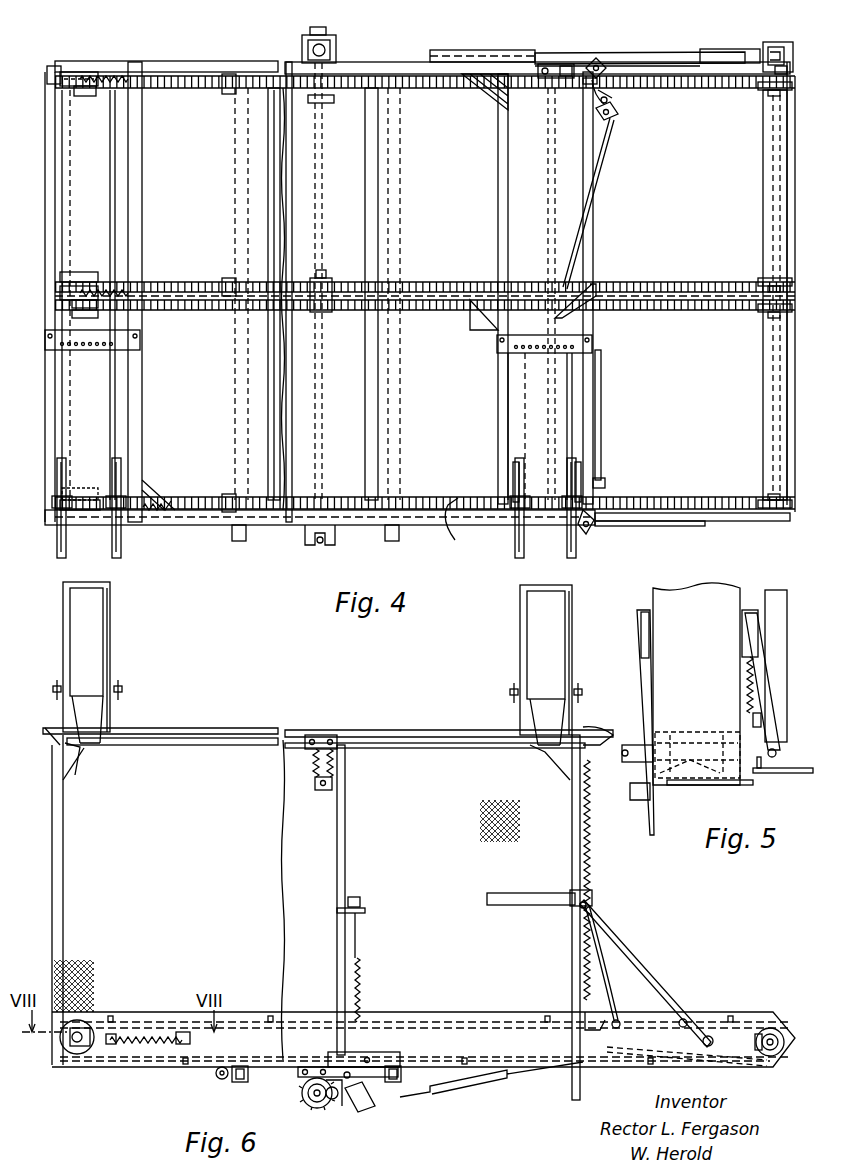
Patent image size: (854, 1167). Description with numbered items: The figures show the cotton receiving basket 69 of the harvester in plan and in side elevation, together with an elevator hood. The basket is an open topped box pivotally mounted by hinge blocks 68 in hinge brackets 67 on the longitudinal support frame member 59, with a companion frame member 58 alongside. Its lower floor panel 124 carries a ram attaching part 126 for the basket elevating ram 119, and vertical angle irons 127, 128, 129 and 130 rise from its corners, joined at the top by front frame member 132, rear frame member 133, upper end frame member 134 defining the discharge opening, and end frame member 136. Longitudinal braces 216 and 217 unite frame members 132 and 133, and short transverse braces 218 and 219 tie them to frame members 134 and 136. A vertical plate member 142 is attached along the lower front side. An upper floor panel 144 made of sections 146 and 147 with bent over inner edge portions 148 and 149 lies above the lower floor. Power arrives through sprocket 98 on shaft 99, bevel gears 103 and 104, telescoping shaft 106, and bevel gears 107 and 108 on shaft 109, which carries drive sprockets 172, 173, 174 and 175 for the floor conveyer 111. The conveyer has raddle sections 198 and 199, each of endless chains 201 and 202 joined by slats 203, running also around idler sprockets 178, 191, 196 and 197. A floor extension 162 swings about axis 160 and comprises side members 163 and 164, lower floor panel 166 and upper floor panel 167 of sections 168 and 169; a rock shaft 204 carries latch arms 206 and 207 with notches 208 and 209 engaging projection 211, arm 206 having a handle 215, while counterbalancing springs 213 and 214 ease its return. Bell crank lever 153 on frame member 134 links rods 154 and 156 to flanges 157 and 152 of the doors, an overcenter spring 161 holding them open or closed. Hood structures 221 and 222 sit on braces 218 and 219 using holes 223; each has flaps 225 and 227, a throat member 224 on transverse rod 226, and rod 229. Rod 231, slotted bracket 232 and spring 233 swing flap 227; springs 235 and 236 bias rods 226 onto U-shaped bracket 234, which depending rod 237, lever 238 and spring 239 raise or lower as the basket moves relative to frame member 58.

In FIG. 4, the basket support frame member 58 is at (392, 542).
In FIG. 6, the basket support frame member 58 is at (396, 1084).
In FIG. 4, the basket support frame member 59 is at (238, 542).
In FIG. 6, the basket support frame member 59 is at (240, 1084).
In FIG. 4, the hinge bracket 67 is at (225, 284).
In FIG. 6, the hinge block 68 is at (214, 1078).
In FIG. 4, the basket 69 is at (342, 420).
In FIG. 6, the basket 69 is at (228, 831).
In FIG. 4, the sprocket 98 is at (328, 103).
In FIG. 4, the shaft 99 is at (323, 190).
In FIG. 4, the bevel gear 103 is at (302, 44).
In FIG. 6, the bevel gear 103 is at (302, 1098).
In FIG. 4, the bevel gear 104 is at (334, 40).
In FIG. 6, the bevel gear 104 is at (336, 1100).
In FIG. 4, the telescoping shaft 106 is at (450, 50).
In FIG. 6, the telescoping shaft 106 is at (486, 1078).
In FIG. 4, the bevel gear 107 is at (776, 42).
In FIG. 6, the bevel gear 107 is at (762, 1030).
In FIG. 4, the bevel gear 108 is at (790, 64).
In FIG. 6, the bevel gear 108 is at (790, 1040).
In FIG. 4, the rotatable shaft 109 is at (780, 145).
In FIG. 4, the floor conveyer 111 is at (368, 452).
In FIG. 6, the floor conveyer 111 is at (542, 1001).
In FIG. 6, the basket elevating ram 119 is at (370, 1106).
In FIG. 6, the lower floor panel 124 is at (130, 1068).
In FIG. 4, the hydraulic ram attaching part 126 is at (356, 288).
In FIG. 6, the hydraulic ram attaching part 126 is at (338, 1068).
In FIG. 6, the angle iron 127 is at (574, 804).
In FIG. 4, the angle iron 128 is at (52, 525).
In FIG. 6, the angle iron 128 is at (63, 852).
In FIG. 4, the angle iron 129 is at (572, 62).
In FIG. 4, the angle iron 130 is at (58, 70).
In FIG. 4, the front frame member 132 is at (284, 527).
In FIG. 6, the front frame member 132 is at (404, 730).
In FIG. 4, the rear frame member 133 is at (225, 62).
In FIG. 4, the upper end frame member 134 is at (594, 240).
In FIG. 5, the upper end frame member 134 is at (787, 616).
In FIG. 4, the end frame member 136 is at (47, 74).
In FIG. 6, the vertical plate member 142 is at (450, 1020).
In FIG. 4, the upper floor panel 144 is at (470, 556).
In FIG. 6, the upper floor panel 144 is at (320, 1025).
In FIG. 4, the upper floor section 146 is at (212, 106).
In FIG. 4, the upper floor section 147 is at (185, 512).
In FIG. 4, the bent over inner edge portion 148 is at (445, 282).
In FIG. 4, the bent over inner edge portion 149 is at (470, 312).
In FIG. 4, the flange 152 is at (605, 482).
In FIG. 4, the bell crank lever 153 is at (596, 262).
In FIG. 4, the rearwardly extending rod 154 is at (594, 185).
In FIG. 4, the forwardly extending rod 156 is at (602, 428).
In FIG. 4, the flange 157 is at (614, 118).
In FIG. 6, the longitudinal horizontal axis 160 is at (608, 1012).
In FIG. 4, the overcenter spring 161 is at (585, 92).
In FIG. 4, the floor extension 162 is at (830, 236).
In FIG. 6, the floor extension 162 is at (818, 1004).
In FIG. 4, the side member 163 is at (728, 522).
In FIG. 6, the side member 163 is at (656, 1022).
In FIG. 4, the side member 164 is at (720, 62).
In FIG. 6, the lower floor panel 166 is at (650, 1068).
In FIG. 4, the upper floor panel 167 is at (830, 382).
In FIG. 4, the upper floor extension section 168 is at (750, 182).
In FIG. 4, the upper floor extension section 169 is at (750, 432).
In FIG. 4, the sprocket 172 is at (790, 504).
In FIG. 4, the sprocket 173 is at (790, 315).
In FIG. 4, the sprocket 174 is at (790, 280).
In FIG. 4, the sprocket 175 is at (793, 85).
In FIG. 4, the sprocket wheel 178 is at (84, 96).
In FIG. 4, the sprocket 191 is at (86, 495).
In FIG. 4, the sprocket wheel 196 is at (60, 306).
In FIG. 4, the sprocket wheel 197 is at (86, 284).
In FIG. 4, the raddle section 198 is at (366, 312).
In FIG. 4, the raddle section 199 is at (440, 282).
In FIG. 4, the endless chain 201 is at (476, 282).
In FIG. 4, the endless chain 202 is at (460, 90).
In FIG. 4, the transverse slat 203 is at (366, 226).
In FIG. 4, the rock shaft 204 is at (699, 352).
In FIG. 6, the rock shaft 204 is at (708, 1036).
In FIG. 4, the arm 206 is at (656, 526).
In FIG. 6, the arm 206 is at (642, 958).
In FIG. 4, the arm 207 is at (648, 54).
In FIG. 6, the notch 208 is at (572, 890).
In FIG. 6, the notch 209 is at (683, 1018).
In FIG. 6, the projection 211 is at (578, 910).
In FIG. 4, the counterbalancing spring 213 is at (594, 530).
In FIG. 6, the counterbalancing spring 213 is at (590, 830).
In FIG. 4, the counterbalancing spring 214 is at (600, 58).
In FIG. 6, the bent upper end portion 215 is at (487, 898).
In FIG. 4, the longitudinal brace 216 is at (498, 160).
In FIG. 4, the longitudinal brace 217 is at (142, 200).
In FIG. 4, the transverse brace 218 is at (140, 345).
In FIG. 4, the transverse brace 219 is at (497, 352).
In FIG. 4, the hood structure 221 is at (110, 418).
In FIG. 6, the hood structure 221 is at (160, 641).
In FIG. 4, the hood structure 222 is at (485, 438).
In FIG. 6, the hood structure 222 is at (518, 626).
In FIG. 4, the hole 223 is at (87, 355).
In FIG. 5, the throat member 224 is at (672, 730).
In FIG. 6, the throat member 224 is at (82, 750).
In FIG. 4, the flap member 225 is at (60, 562).
In FIG. 5, the flap member 225 is at (655, 816).
In FIG. 4, the transverse horizontal rod 226 is at (322, 548).
In FIG. 5, the transverse horizontal rod 226 is at (622, 760).
In FIG. 6, the transverse horizontal rod 226 is at (394, 750).
In FIG. 4, the flap member 227 is at (118, 562).
In FIG. 5, the flap member 227 is at (806, 774).
In FIG. 5, the rod 229 is at (752, 722).
In FIG. 4, the rod 231 is at (570, 490).
In FIG. 5, the rod 231 is at (770, 690).
In FIG. 5, the slotted bracket 232 is at (740, 620).
In FIG. 5, the spring 233 is at (748, 688).
In FIG. 6, the U-shaped bracket 234 is at (305, 752).
In FIG. 6, the spring 235 is at (318, 772).
In FIG. 6, the spring 236 is at (335, 775).
In FIG. 6, the vertically depending rod 237 is at (346, 858).
In FIG. 6, the lever 238 is at (380, 1052).
In FIG. 6, the spring 239 is at (362, 968).